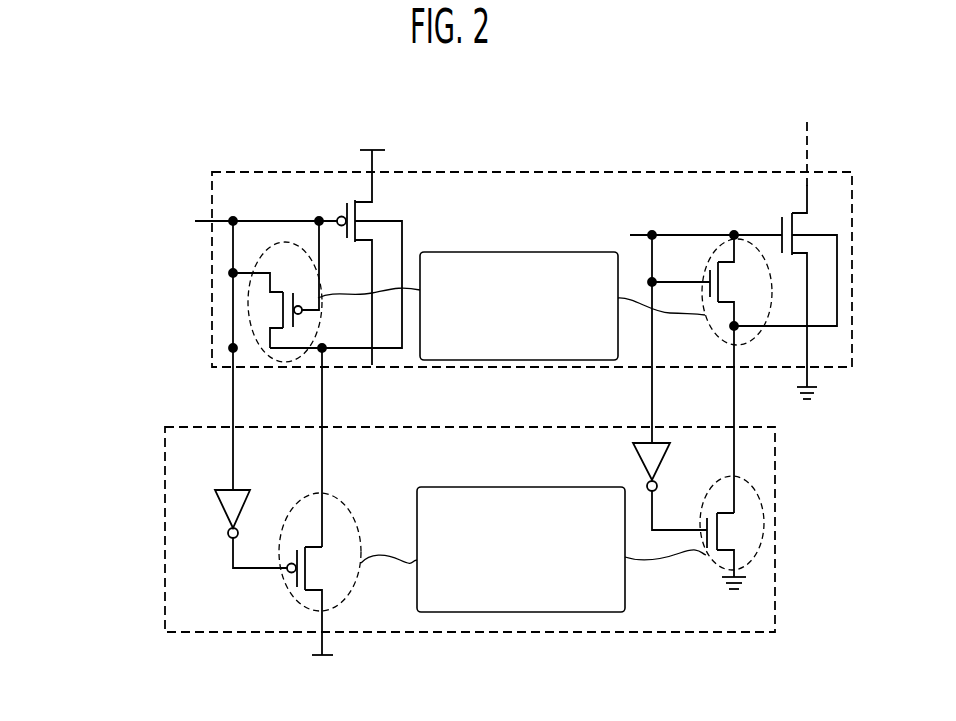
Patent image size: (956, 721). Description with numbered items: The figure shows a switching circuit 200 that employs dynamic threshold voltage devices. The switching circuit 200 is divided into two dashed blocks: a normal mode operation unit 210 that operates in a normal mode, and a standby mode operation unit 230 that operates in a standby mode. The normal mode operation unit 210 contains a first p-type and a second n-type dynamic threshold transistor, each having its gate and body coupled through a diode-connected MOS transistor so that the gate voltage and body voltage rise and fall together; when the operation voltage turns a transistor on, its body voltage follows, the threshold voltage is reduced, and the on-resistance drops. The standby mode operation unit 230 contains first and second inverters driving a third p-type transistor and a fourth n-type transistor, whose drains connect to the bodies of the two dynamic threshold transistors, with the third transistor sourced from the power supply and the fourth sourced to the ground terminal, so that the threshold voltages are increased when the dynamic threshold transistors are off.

The switching circuit 200 is at (553, 140).
The normal mode operation unit 210 is at (212, 295).
The standby mode operation unit 230 is at (165, 538).